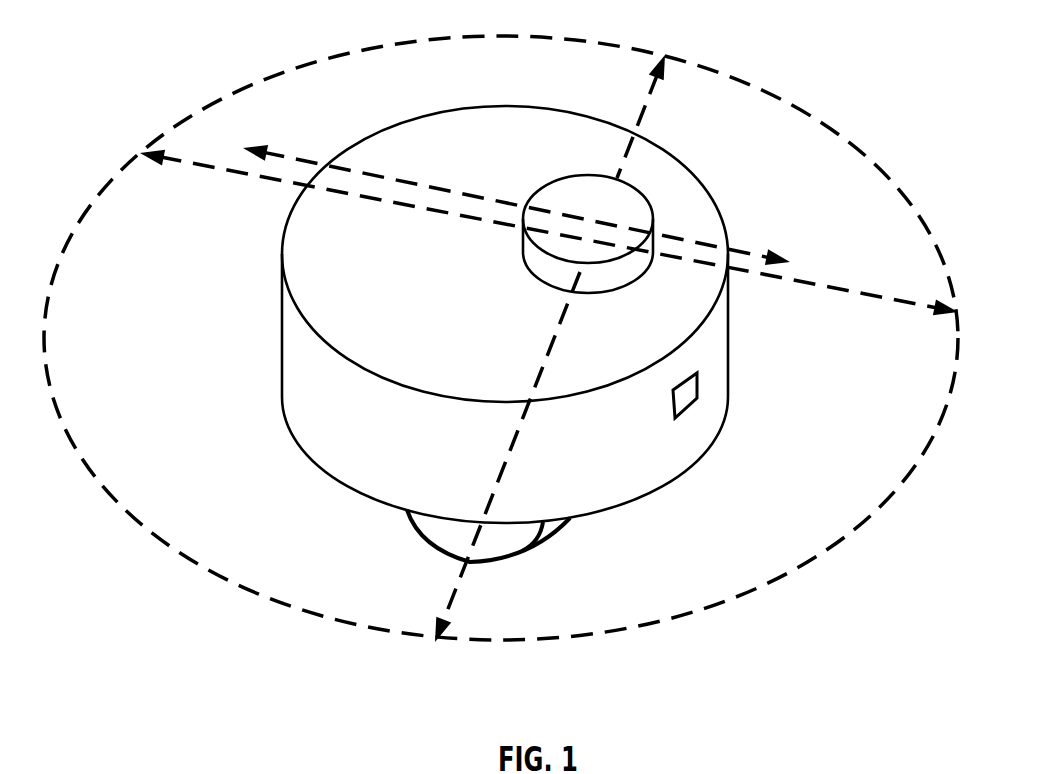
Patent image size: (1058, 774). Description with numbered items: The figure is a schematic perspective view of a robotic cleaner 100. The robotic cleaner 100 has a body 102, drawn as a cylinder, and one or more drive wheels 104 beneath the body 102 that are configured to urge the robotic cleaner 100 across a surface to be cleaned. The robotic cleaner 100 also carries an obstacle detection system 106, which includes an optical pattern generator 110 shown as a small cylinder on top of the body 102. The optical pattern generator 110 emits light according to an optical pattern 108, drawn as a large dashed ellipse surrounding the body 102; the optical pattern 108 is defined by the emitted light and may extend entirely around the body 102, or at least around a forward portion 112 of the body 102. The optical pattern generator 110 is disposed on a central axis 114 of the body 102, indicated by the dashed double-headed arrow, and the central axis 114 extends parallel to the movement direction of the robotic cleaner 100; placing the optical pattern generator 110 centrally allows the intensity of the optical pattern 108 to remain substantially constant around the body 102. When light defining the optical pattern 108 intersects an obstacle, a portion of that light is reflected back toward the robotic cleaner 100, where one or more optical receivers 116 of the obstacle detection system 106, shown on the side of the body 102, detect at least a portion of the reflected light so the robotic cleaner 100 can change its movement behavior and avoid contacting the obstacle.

The robotic cleaner 100 is at (104, 58).
The body 102 is at (285, 342).
The drive wheel 104 is at (455, 556).
The obstacle detection system 106 is at (745, 200).
The optical pattern 108 is at (765, 583).
The optical pattern generator 110 is at (547, 190).
The forward portion 112 is at (795, 385).
The central axis 114 is at (315, 160).
The optical receiver 116 is at (678, 415).